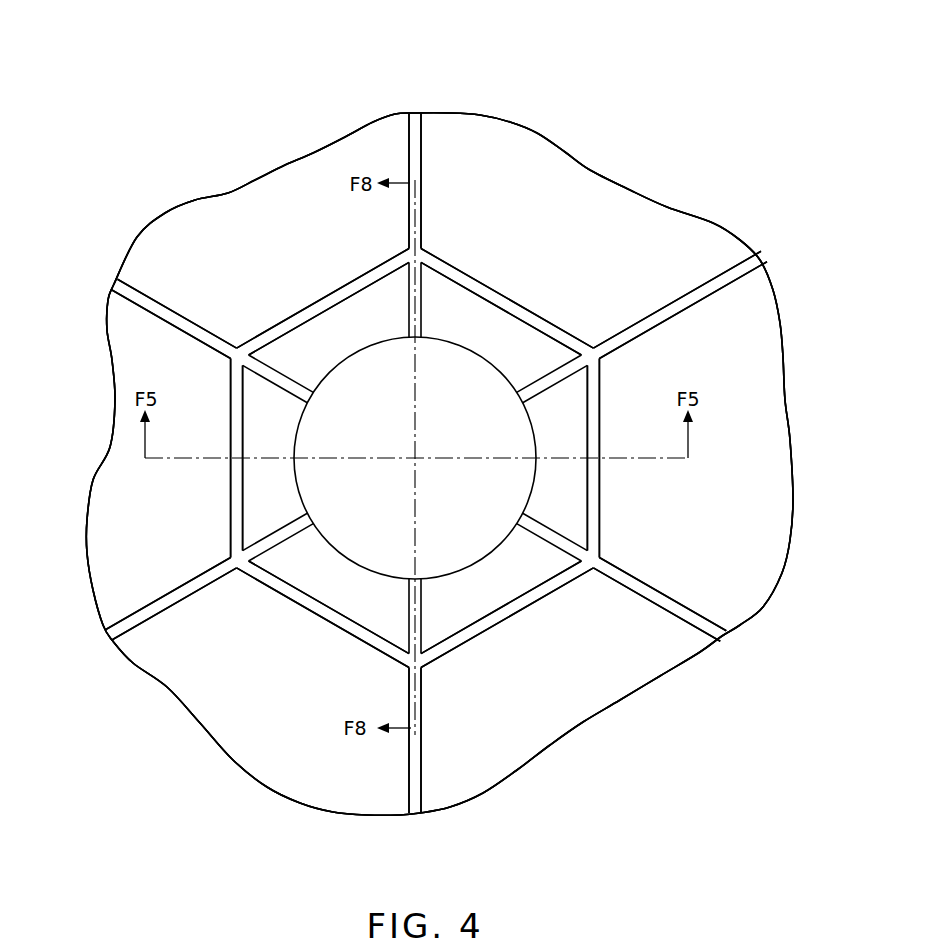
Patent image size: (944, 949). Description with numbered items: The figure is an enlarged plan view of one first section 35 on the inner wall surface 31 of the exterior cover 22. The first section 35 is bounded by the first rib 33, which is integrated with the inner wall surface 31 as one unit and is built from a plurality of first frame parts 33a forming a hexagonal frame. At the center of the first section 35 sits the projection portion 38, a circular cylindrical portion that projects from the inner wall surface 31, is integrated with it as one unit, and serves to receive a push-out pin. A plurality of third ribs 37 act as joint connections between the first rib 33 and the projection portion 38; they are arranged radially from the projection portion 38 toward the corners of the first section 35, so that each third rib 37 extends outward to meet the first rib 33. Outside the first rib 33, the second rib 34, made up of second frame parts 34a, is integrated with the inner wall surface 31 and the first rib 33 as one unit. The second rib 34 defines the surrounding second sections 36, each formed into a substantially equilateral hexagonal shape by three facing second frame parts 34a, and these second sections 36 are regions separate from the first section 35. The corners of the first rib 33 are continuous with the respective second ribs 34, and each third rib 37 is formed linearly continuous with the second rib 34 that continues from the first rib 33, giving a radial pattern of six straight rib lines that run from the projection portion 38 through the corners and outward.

The exterior cover 22 is at (216, 68).
The inner wall surface 31 is at (228, 198).
The first rib 33 is at (586, 330).
The first frame part 33a is at (268, 330).
The second rib 34 is at (719, 268).
The second frame part 34a is at (426, 128).
The first section 35 is at (335, 322).
The second section 36 is at (372, 130).
The third rib 37 is at (408, 285).
The projection portion 38 is at (466, 343).